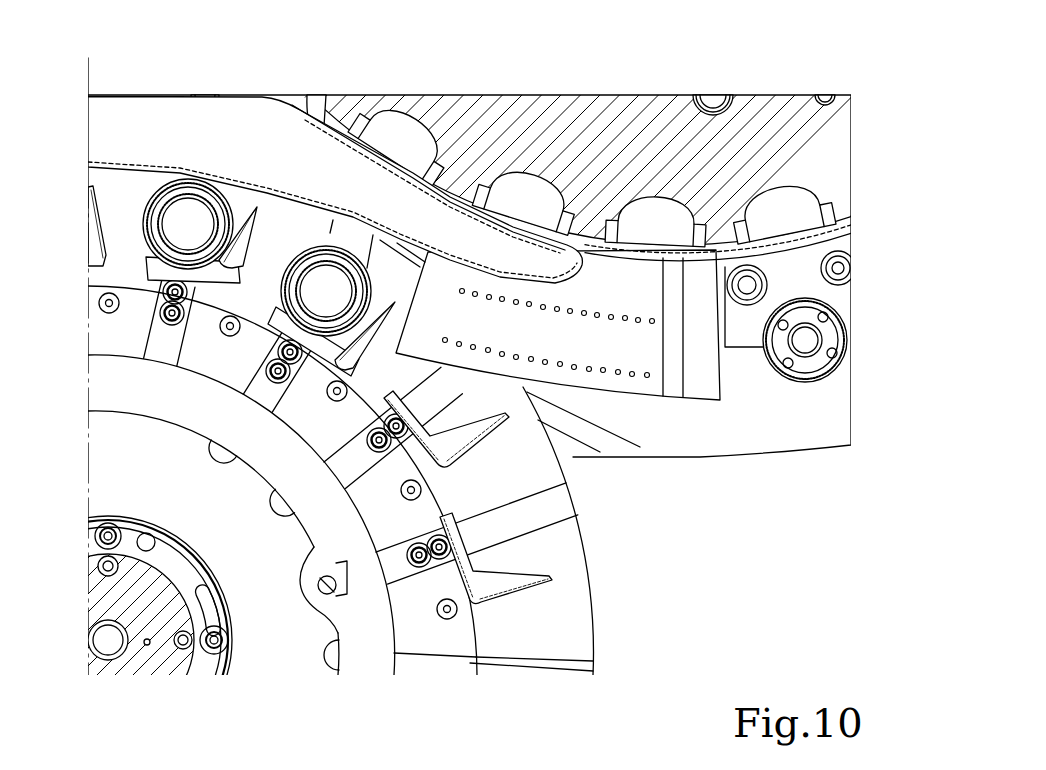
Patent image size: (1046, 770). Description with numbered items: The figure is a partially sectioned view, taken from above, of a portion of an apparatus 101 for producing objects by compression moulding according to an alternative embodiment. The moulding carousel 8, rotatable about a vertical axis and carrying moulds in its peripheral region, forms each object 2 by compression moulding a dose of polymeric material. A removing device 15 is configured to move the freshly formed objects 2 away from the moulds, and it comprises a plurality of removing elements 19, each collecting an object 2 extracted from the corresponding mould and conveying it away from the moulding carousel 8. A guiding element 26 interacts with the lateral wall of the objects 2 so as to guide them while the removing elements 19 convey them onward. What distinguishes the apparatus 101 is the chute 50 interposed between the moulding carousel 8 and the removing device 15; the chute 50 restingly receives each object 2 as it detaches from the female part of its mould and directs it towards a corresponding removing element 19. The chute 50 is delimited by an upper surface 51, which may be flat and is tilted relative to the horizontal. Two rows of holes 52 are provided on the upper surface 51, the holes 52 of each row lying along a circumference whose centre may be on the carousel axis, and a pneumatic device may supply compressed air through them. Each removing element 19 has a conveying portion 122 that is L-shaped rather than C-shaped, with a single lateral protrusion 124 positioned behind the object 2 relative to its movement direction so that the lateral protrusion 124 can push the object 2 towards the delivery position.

The object 2 is at (158, 197).
The moulding carousel 8 is at (597, 130).
The removing device 15 is at (50, 675).
The removing element 19 is at (516, 626).
The guiding element 26 is at (495, 253).
The chute 50 is at (628, 297).
The upper surface 51 is at (612, 357).
The holes 52 is at (574, 370).
The apparatus 101 is at (809, 492).
The conveying portion 122 is at (494, 465).
The lateral protrusion 124 is at (520, 587).